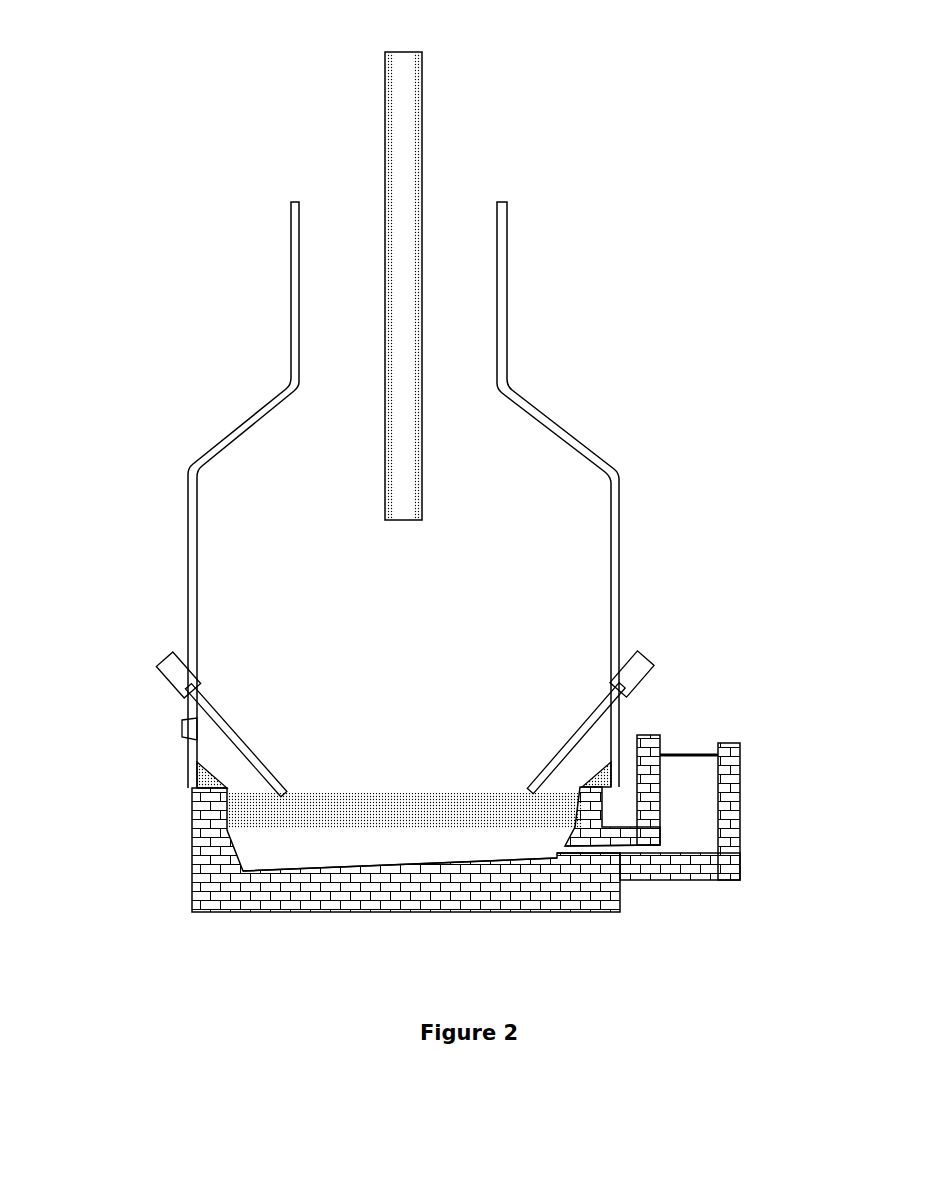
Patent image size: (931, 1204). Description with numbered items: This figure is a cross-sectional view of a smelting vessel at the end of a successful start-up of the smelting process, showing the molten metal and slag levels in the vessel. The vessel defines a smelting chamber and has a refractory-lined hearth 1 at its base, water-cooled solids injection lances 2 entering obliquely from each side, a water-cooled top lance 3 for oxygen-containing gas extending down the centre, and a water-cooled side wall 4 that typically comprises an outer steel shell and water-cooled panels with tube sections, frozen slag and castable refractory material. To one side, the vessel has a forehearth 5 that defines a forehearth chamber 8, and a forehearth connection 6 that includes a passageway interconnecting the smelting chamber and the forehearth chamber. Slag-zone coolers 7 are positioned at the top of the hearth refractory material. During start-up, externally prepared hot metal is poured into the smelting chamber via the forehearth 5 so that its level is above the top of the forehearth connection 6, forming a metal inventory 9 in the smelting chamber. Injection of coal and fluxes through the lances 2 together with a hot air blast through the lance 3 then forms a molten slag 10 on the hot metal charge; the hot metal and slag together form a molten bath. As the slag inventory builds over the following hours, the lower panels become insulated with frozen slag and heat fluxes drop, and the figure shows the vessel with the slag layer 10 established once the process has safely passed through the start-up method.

The refractory-lined hearth 1 is at (209, 860).
The water-cooled solids injection lances 2 is at (165, 668).
The water-cooled top lance 3 is at (404, 503).
The water-cooled side wall 4 is at (188, 543).
The forehearth 5 is at (740, 808).
The forehearth connection 6 is at (593, 850).
The slag-zone coolers 7 is at (207, 778).
The forehearth chamber 8 is at (696, 738).
The metal inventory 9 is at (362, 840).
The molten slag 10 is at (462, 812).